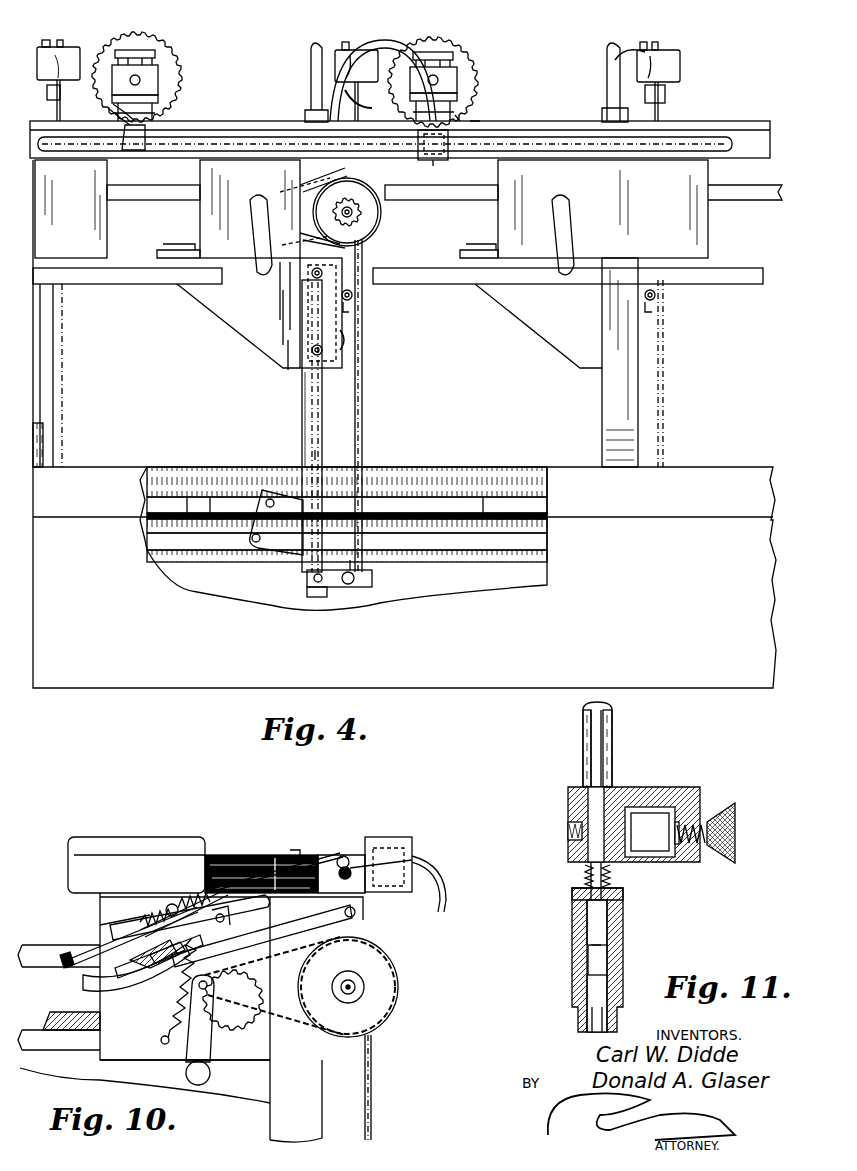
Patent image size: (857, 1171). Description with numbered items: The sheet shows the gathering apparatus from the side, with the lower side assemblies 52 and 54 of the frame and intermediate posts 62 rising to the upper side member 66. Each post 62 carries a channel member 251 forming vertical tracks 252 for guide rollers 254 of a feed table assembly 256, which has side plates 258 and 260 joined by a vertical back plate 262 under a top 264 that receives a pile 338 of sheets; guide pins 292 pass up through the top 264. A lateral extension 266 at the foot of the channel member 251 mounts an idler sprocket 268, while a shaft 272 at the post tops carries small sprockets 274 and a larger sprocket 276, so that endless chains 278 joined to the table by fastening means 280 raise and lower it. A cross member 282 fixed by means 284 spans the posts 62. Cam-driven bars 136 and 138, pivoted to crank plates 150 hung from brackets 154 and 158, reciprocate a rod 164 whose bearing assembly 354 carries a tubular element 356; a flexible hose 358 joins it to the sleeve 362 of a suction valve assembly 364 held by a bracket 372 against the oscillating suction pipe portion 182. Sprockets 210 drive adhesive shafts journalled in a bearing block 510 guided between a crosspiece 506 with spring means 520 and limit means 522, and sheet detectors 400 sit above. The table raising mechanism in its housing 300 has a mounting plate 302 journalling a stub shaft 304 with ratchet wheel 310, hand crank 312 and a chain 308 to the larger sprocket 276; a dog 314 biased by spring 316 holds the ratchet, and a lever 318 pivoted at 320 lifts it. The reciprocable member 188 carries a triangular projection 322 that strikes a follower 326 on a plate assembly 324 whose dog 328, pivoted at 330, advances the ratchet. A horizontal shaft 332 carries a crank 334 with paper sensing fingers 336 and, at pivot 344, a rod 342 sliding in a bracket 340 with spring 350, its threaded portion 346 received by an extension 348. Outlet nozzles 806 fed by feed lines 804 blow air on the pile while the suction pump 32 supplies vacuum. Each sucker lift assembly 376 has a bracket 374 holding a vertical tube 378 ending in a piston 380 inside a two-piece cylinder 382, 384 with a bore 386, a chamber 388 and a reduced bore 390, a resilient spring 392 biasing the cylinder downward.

In FIG. 4, the sheet detector 400 is at (70, 50).
In FIG. 4, the adjustable screw 520 is at (160, 62).
In FIG. 4, the bearing block 510 is at (157, 76).
In FIG. 4, the limit means 522 is at (158, 100).
In FIG. 4, the crosspiece 506 is at (150, 118).
In FIG. 4, the upper side member 66 is at (228, 128).
In FIG. 10, the upper side member 66 is at (72, 845).
In FIG. 4, the rotatable portion of suction pipe assembly 182 is at (583, 140).
In FIG. 4, the reciprocable member 188 is at (128, 200).
In FIG. 10, the reciprocable member 188 is at (25, 945).
In FIG. 4, the top 264 is at (182, 249).
In FIG. 4, the larger sprocket 276 is at (370, 212).
In FIG. 10, the larger sprocket 276 is at (380, 1002).
In FIG. 4, the small sprockets 274 is at (370, 232).
In FIG. 4, the flexible hose 358 is at (388, 40).
In FIG. 11, the flexible hose 358 is at (613, 732).
In FIG. 4, the sprocket 210 is at (447, 40).
In FIG. 4, the bearing assembly 354 is at (312, 105).
In FIG. 4, the sleeve 362 is at (362, 108).
In FIG. 4, the suction valve assembly 364 is at (468, 118).
In FIG. 4, the bracket 372 is at (445, 160).
In FIG. 4, the cross member 282 is at (352, 295).
In FIG. 4, the securing means 284 is at (349, 308).
In FIG. 4, the fastening means 280 is at (346, 340).
In FIG. 4, the endless chain 278 is at (364, 370).
In FIG. 10, the endless chain 278 is at (374, 1085).
In FIG. 4, the vertical back plate 262 is at (296, 298).
In FIG. 4, the side plate 260 is at (283, 312).
In FIG. 4, the feed table assembly 256 is at (525, 345).
In FIG. 10, the feed table assembly 256 is at (24, 1068).
In FIG. 4, the side plate 258 is at (280, 350).
In FIG. 4, the guide rollers 254 is at (302, 375).
In FIG. 4, the intermediate posts 62 is at (302, 388).
In FIG. 10, the intermediate posts 62 is at (272, 1125).
In FIG. 4, the channel member 251 is at (310, 405).
In FIG. 4, the vertical tracks 252 is at (316, 432).
In FIG. 4, the vertically reciprocable rod 164 is at (312, 452).
In FIG. 4, the bracket 154 is at (172, 497).
In FIG. 4, the bracket 158 is at (207, 497).
In FIG. 4, the elongated bar 136 is at (165, 545).
In FIG. 4, the elongated bar 138 is at (208, 545).
In FIG. 4, the crank plate 150 is at (278, 540).
In FIG. 4, the idler sprocket 268 is at (362, 568).
In FIG. 4, the lateral extension 266 is at (372, 581).
In FIG. 4, the lower side assembly 54 is at (490, 575).
In FIG. 4, the lower side assembly 52 is at (733, 472).
In FIG. 10, the guide pins 292 is at (296, 850).
In FIG. 10, the pile 338 is at (256, 855).
In FIG. 10, the elongated rod 342 is at (279, 855).
In FIG. 10, the paper sensing fingers 336 is at (325, 858).
In FIG. 10, the pivotal connection 344 is at (343, 855).
In FIG. 10, the crank 334 is at (350, 860).
In FIG. 10, the outlet nozzles 806 is at (352, 860).
In FIG. 10, the feed lines 804 is at (432, 878).
In FIG. 10, the horizontal shaft 332 is at (389, 864).
In FIG. 10, the pivot 320 is at (357, 913).
In FIG. 10, the swingable plate assembly 324 is at (168, 905).
In FIG. 10, the spring 350 is at (185, 895).
In FIG. 10, the threaded portion 346 is at (140, 918).
In FIG. 10, the bracket 340 is at (158, 925).
In FIG. 10, the box-like housing 300 is at (100, 904).
In FIG. 10, the triangular projection 322 is at (100, 924).
In FIG. 10, the internally threaded extension 348 is at (80, 955).
In FIG. 10, the follower 326 is at (146, 954).
In FIG. 10, the swingable dog 314 is at (226, 910).
In FIG. 10, the pivot 330 is at (159, 959).
In FIG. 10, the stub shaft 304 is at (214, 980).
In FIG. 10, the swingable lever 318 is at (90, 984).
In FIG. 10, the ratchet engaging dog 328 is at (160, 962).
In FIG. 10, the suction pump 32 is at (238, 1012).
In FIG. 10, the spring 316 is at (165, 1035).
In FIG. 10, the shaft 272 is at (356, 987).
In FIG. 10, the endless chain 308 is at (388, 1028).
In FIG. 10, the mounting plate 302 is at (262, 1052).
In FIG. 10, the ratchet wheel 310 is at (186, 1060).
In FIG. 10, the hand crank 312 is at (206, 1085).
In FIG. 11, the vertical tube 378 is at (613, 760).
In FIG. 11, the bracket 374 is at (690, 787).
In FIG. 11, the resilient spring 392 is at (610, 870).
In FIG. 11, the tubular element 356 is at (668, 855).
In FIG. 11, the bore 386 is at (572, 893).
In FIG. 11, the cylinder 382 is at (610, 890).
In FIG. 11, the sucker lift assembly 376 is at (572, 925).
In FIG. 11, the piston 380 is at (608, 925).
In FIG. 11, the cylinder 384 is at (610, 955).
In FIG. 11, the cylindrical chamber 388 is at (572, 969).
In FIG. 11, the reduced diameter bore 390 is at (620, 1010).